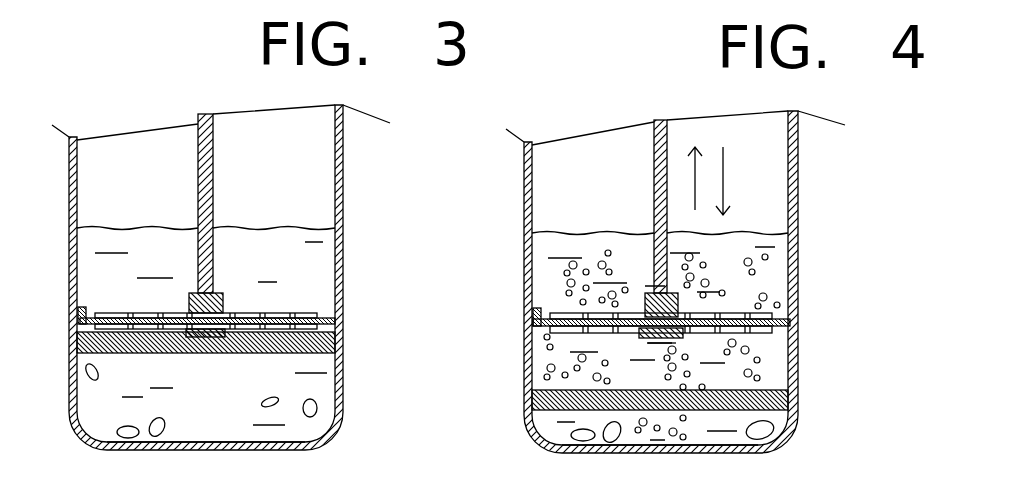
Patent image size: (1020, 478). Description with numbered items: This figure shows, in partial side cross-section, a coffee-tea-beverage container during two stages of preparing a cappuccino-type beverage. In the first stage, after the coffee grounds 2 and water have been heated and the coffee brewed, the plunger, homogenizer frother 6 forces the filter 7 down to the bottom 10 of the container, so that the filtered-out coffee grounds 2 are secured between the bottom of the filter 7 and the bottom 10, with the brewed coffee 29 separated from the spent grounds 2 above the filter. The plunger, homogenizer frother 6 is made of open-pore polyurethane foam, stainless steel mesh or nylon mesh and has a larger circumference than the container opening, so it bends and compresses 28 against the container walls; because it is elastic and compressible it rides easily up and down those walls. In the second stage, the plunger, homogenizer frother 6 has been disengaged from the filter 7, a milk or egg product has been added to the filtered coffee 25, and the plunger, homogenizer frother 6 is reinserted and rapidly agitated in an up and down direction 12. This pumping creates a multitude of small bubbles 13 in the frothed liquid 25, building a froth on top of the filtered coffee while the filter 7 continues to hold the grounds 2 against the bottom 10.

In FIG. 3, the coffee grounds 2 is at (280, 398).
In FIG. 3, the plunger, homogenizer frother 6 is at (240, 303).
In FIG. 4, the plunger, homogenizer frother 6 is at (753, 290).
In FIG. 3, the filter 7 is at (323, 347).
In FIG. 4, the filter 7 is at (763, 398).
In FIG. 3, the bottom of container 10 is at (280, 440).
In FIG. 4, the bottom of container 10 is at (745, 443).
In FIG. 4, the up and down direction 12 is at (747, 177).
In FIG. 4, the small bubbles 13 is at (765, 257).
In FIG. 3, the filtered coffee 25 is at (285, 253).
In FIG. 4, the filtered coffee 25 is at (775, 270).
In FIG. 3, the bends and compresses 28 is at (333, 313).
In FIG. 4, the bends and compresses 28 is at (800, 322).
In FIG. 3, the brewed coffee 29 is at (240, 418).